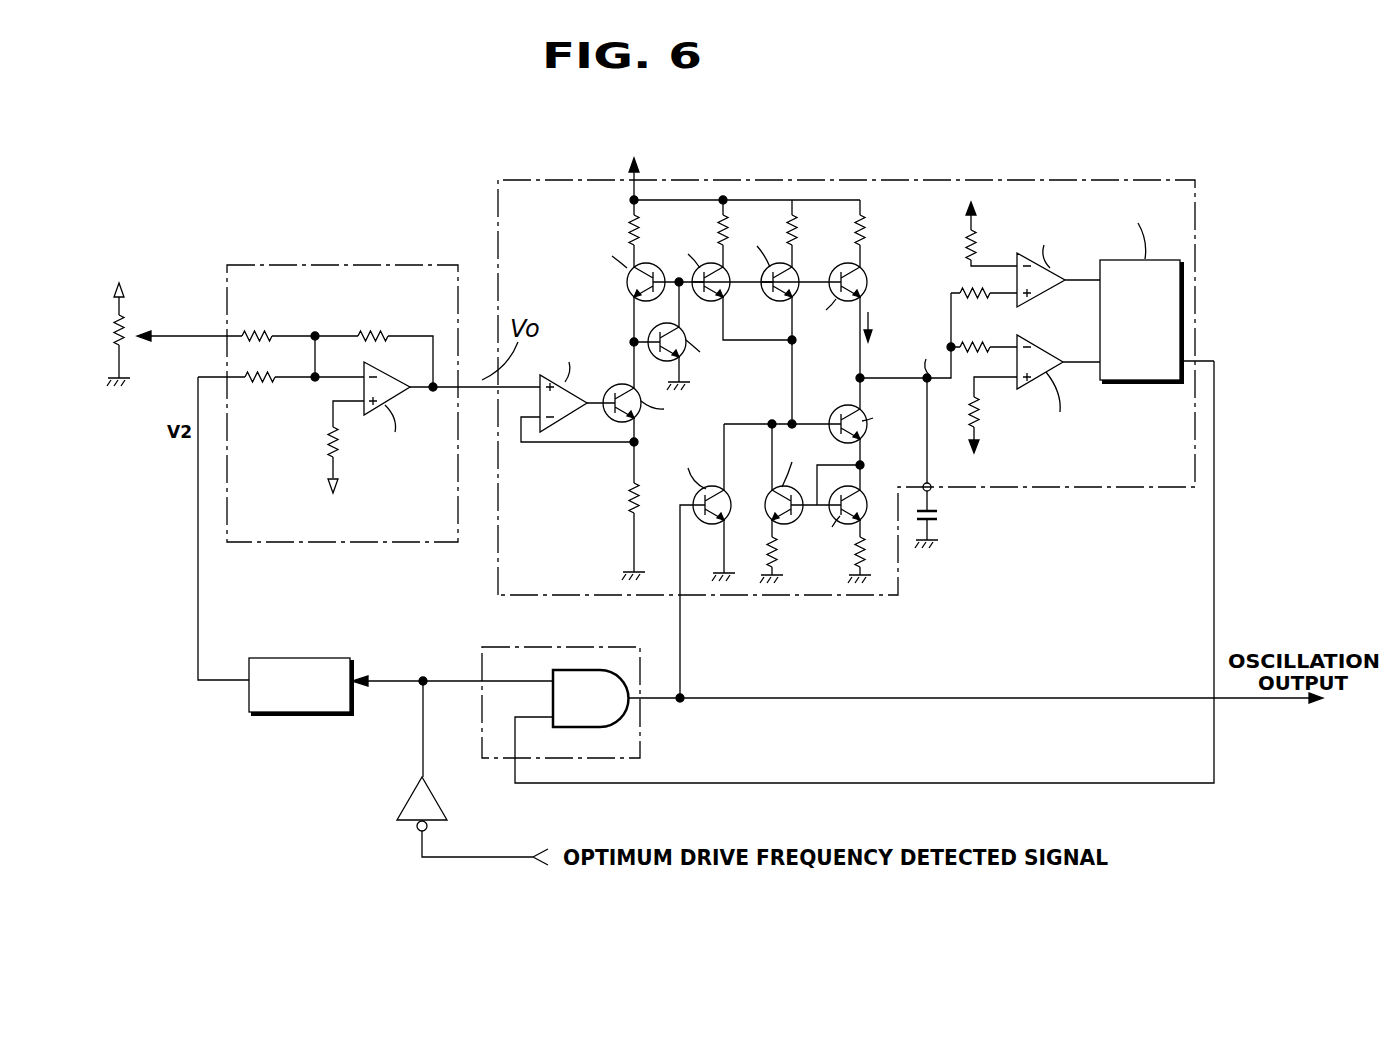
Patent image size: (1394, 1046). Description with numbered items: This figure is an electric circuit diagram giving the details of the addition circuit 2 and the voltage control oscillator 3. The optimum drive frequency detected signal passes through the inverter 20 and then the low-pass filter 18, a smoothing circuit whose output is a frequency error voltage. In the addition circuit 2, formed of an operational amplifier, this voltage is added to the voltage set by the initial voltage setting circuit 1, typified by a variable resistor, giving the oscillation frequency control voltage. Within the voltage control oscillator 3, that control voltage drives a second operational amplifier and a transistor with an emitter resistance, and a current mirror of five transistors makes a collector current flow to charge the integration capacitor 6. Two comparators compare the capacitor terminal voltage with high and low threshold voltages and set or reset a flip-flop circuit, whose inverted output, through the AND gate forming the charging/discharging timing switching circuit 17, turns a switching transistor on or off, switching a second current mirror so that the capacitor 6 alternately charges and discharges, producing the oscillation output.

The initial voltage setting circuit 1 is at (115, 316).
The addition circuit 2 is at (323, 264).
The voltage control oscillator 3 is at (1043, 177).
The integration capacitor 6 is at (943, 518).
The charging/discharging timing switching circuit 17 is at (623, 736).
The low-pass filter 18 is at (327, 657).
The inverter 20 is at (405, 805).